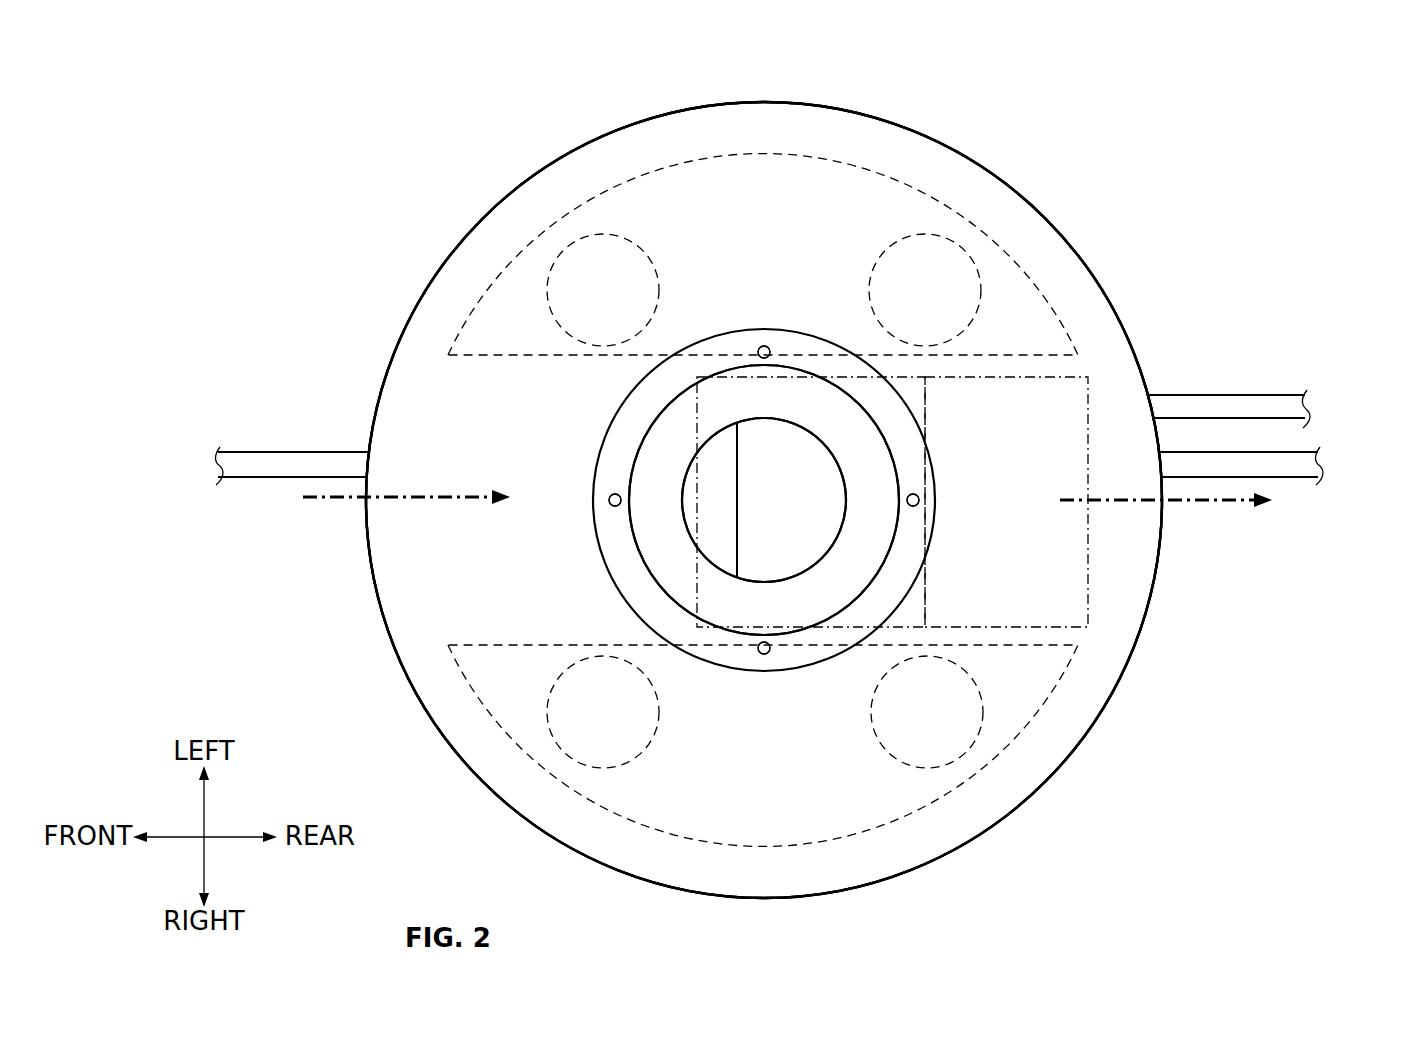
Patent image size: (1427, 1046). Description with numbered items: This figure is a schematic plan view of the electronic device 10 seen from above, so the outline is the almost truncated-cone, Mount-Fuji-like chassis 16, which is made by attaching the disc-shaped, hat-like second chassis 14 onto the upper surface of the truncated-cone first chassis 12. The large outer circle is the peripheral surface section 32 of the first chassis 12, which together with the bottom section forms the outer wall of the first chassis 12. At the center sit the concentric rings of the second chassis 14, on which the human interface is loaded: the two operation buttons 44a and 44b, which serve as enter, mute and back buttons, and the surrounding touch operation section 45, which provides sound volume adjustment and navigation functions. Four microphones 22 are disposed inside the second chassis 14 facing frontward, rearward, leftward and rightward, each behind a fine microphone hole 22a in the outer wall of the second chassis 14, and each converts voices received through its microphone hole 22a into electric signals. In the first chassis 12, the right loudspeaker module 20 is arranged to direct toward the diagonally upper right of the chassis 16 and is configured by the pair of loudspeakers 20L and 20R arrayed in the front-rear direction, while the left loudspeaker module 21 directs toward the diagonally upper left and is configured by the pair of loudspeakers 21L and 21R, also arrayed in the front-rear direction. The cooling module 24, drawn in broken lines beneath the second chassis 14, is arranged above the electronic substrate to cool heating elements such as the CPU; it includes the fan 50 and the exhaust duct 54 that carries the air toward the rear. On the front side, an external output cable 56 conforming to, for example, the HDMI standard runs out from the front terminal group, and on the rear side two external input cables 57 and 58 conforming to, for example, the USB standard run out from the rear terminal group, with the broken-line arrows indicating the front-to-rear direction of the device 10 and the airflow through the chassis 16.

The electronic device 10 is at (228, 142).
The first chassis 12 is at (764, 500).
The second chassis 14 is at (720, 666).
The chassis 16 is at (468, 234).
The right loudspeaker module 20 is at (767, 847).
The loudspeaker 20L is at (967, 753).
The loudspeaker 20R is at (620, 768).
The left loudspeaker module 21 is at (712, 156).
The loudspeaker 21L is at (593, 233).
The loudspeaker 21R is at (925, 233).
The microphone 22 is at (758, 353).
The microphone hole 22a is at (764, 500).
The cooling module 24 is at (1087, 386).
The peripheral surface section 32 is at (469, 766).
The operation button 44a is at (710, 520).
The operation button 44b is at (797, 455).
The touch operation section 45 is at (640, 597).
The fan 50 is at (830, 380).
The exhaust duct 54 is at (1000, 377).
The external output cable 56 is at (250, 463).
The external input cable 57 is at (1232, 402).
The external input cable 58 is at (1293, 458).